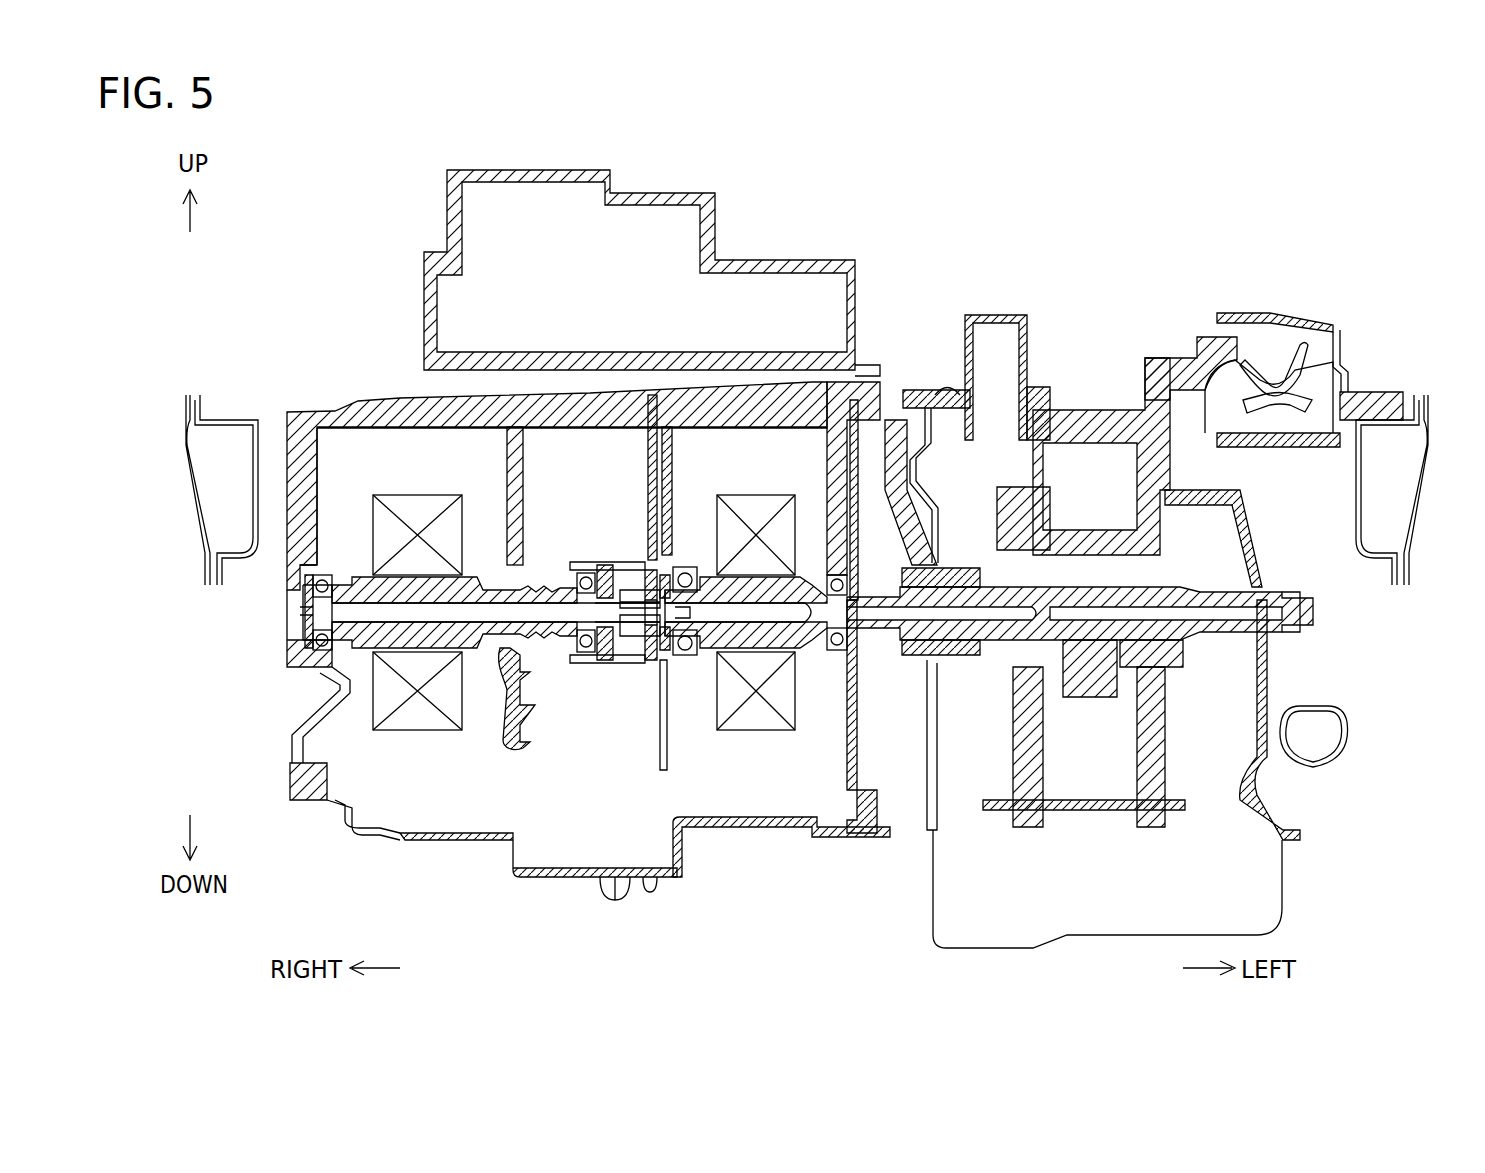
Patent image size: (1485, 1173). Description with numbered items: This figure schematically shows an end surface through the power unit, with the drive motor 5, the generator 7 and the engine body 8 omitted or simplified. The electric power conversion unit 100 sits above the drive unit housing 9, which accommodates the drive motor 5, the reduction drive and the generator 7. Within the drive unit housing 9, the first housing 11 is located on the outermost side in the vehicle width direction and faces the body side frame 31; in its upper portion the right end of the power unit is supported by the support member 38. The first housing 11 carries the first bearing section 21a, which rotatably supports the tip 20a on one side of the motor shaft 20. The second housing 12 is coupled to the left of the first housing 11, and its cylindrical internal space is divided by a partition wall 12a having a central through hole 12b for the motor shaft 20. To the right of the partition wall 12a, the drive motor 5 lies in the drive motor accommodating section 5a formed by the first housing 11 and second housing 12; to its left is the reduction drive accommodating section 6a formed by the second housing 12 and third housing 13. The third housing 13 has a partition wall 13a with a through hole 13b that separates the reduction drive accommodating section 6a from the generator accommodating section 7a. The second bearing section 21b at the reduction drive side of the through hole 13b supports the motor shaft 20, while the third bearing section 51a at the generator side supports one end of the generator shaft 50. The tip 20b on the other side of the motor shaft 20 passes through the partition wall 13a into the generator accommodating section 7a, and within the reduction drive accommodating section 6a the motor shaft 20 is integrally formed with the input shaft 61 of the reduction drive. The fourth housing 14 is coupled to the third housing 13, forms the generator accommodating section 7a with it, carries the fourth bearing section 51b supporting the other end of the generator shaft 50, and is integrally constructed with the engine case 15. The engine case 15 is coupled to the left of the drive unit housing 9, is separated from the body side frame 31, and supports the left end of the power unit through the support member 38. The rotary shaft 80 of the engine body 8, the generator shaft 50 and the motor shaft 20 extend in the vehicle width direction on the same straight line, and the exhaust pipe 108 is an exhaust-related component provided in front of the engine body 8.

The electric power conversion unit 100 is at (520, 170).
The drive unit housing 9 is at (378, 384).
The first housing 11 is at (322, 805).
The second housing 12 is at (465, 845).
The third housing 13 is at (717, 828).
The fourth housing 14 is at (872, 830).
The drive motor 5 is at (418, 495).
The generator 7 is at (757, 495).
The partition wall 12a is at (523, 450).
The through hole 12b is at (505, 705).
The partition wall 13a is at (648, 482).
The through hole 13b is at (628, 652).
The motor shaft 20 is at (430, 580).
The tip 20a is at (307, 655).
The tip 20b is at (638, 662).
The first bearing section 21a is at (326, 575).
The second bearing section 21b is at (582, 573).
The generator shaft 50 is at (775, 650).
The third bearing section 51a is at (690, 567).
The fourth bearing section 51b is at (832, 575).
The input shaft 61 is at (556, 655).
The rotary shaft 80 is at (990, 587).
The engine body 8 is at (988, 757).
The engine case 15 is at (1270, 656).
The exhaust pipe 108 is at (1347, 737).
The support member 38 is at (1342, 330).
The body side frame 31 is at (1426, 450).
The drive motor accommodating section 5a is at (432, 768).
The reduction drive accommodating section 6a is at (585, 818).
The generator accommodating section 7a is at (778, 768).